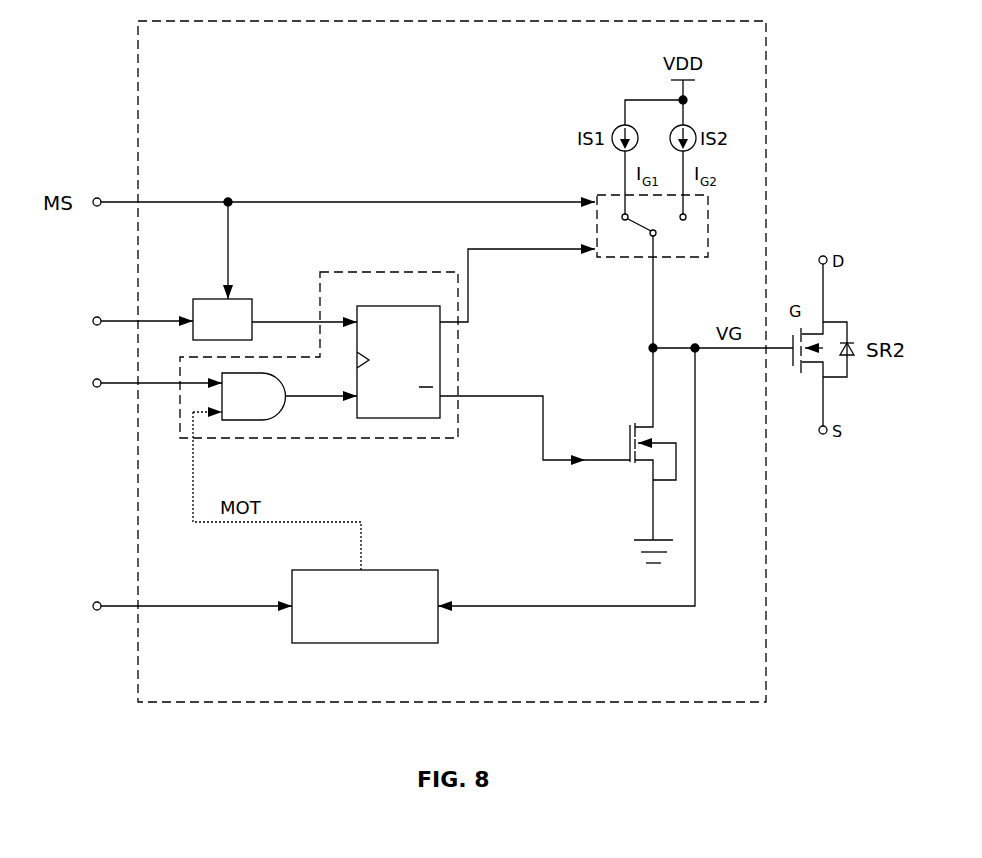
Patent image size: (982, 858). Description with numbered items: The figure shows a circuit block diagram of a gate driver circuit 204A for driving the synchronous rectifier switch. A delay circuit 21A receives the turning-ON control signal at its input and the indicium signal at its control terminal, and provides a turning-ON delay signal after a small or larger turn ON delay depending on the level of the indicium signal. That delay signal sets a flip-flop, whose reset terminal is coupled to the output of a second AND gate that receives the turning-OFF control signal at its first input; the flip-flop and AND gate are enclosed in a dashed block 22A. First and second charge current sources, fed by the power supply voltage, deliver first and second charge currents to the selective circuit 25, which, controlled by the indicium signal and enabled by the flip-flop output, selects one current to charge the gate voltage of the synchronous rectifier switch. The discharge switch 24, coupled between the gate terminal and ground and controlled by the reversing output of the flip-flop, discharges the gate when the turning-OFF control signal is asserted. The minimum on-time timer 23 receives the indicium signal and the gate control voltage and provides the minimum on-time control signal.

The gate driver circuit 204A is at (237, 57).
The delay circuit 21A is at (243, 331).
The latch circuit with flip-flop FF2 and AND gate 22A is at (362, 440).
The minimum on-time timer 23 is at (360, 645).
The discharge switch 24 is at (627, 473).
The selective circuit 25 is at (622, 260).